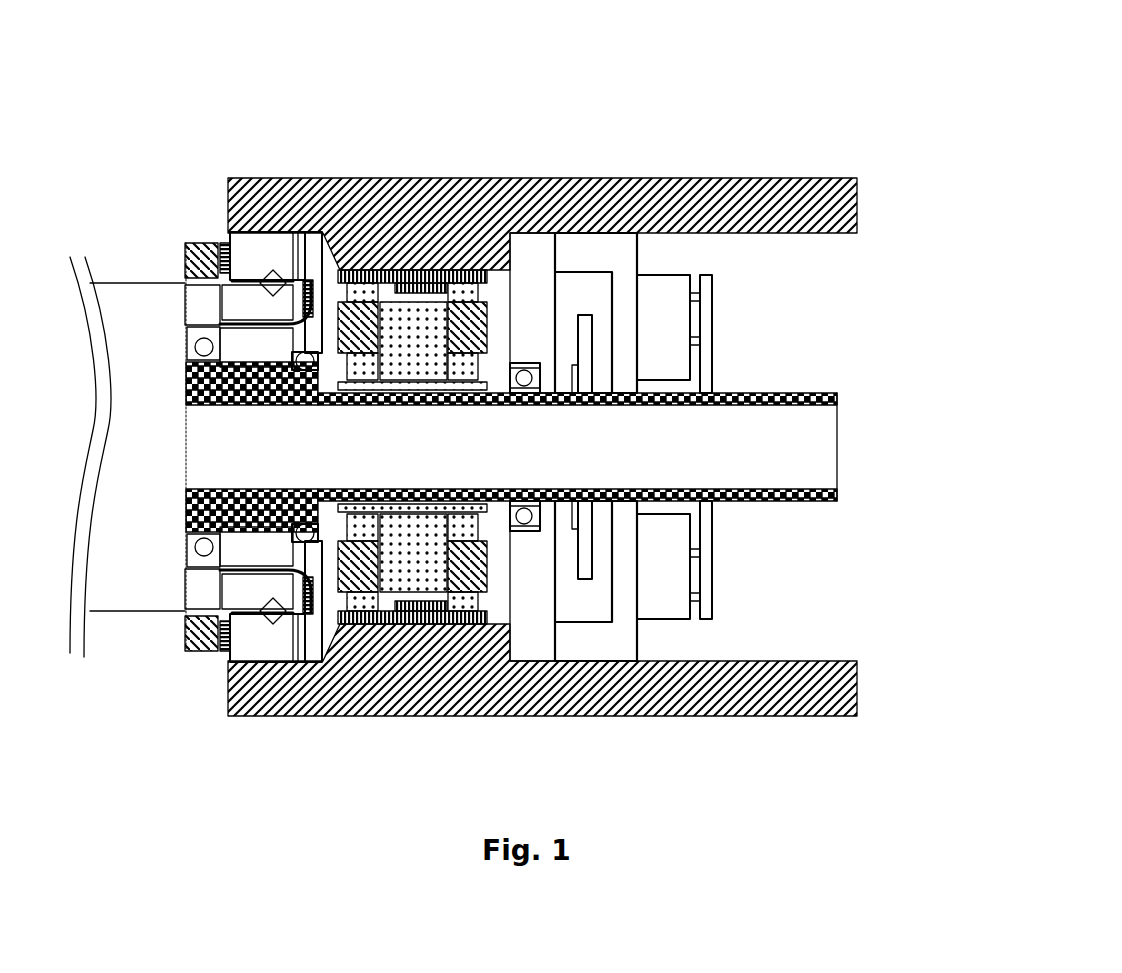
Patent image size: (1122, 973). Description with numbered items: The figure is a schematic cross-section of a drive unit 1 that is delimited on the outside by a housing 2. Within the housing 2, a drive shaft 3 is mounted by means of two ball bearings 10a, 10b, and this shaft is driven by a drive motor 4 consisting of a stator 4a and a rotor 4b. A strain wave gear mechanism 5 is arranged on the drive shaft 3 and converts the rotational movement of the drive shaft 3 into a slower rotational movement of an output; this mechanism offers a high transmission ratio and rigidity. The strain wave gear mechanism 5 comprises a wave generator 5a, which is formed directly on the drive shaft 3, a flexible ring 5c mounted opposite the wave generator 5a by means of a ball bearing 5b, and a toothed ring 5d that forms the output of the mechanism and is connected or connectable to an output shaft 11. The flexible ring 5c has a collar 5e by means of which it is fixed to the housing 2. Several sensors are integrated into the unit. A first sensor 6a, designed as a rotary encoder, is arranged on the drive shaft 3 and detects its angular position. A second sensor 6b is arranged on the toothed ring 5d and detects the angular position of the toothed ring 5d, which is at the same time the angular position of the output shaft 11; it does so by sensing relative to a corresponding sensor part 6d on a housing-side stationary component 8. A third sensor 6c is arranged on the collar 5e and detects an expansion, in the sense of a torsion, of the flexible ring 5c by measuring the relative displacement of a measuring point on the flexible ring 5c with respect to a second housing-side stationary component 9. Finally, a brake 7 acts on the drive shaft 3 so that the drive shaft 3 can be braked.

The drive unit 1 is at (740, 62).
The housing 2 is at (562, 190).
The drive shaft 3 is at (810, 413).
The drive motor 4 is at (431, 246).
The stator 4a is at (447, 288).
The rotor 4b is at (430, 573).
The strain wave gear mechanism 5 is at (201, 670).
The wave generator 5a is at (115, 337).
The ball bearing 5b is at (187, 387).
The flexible ring 5c is at (198, 588).
The toothed ring 5d is at (187, 610).
The collar 5e is at (296, 262).
The first sensor 6a is at (588, 337).
The second sensor 6b is at (168, 262).
The third sensor 6c is at (337, 625).
The sensor part 6d is at (207, 243).
The brake 7 is at (673, 342).
The stationary component 8 is at (263, 647).
The stationary component 9 is at (320, 600).
The ball bearing 10a is at (318, 350).
The ball bearing 10b is at (523, 522).
The output shaft 11 is at (77, 217).